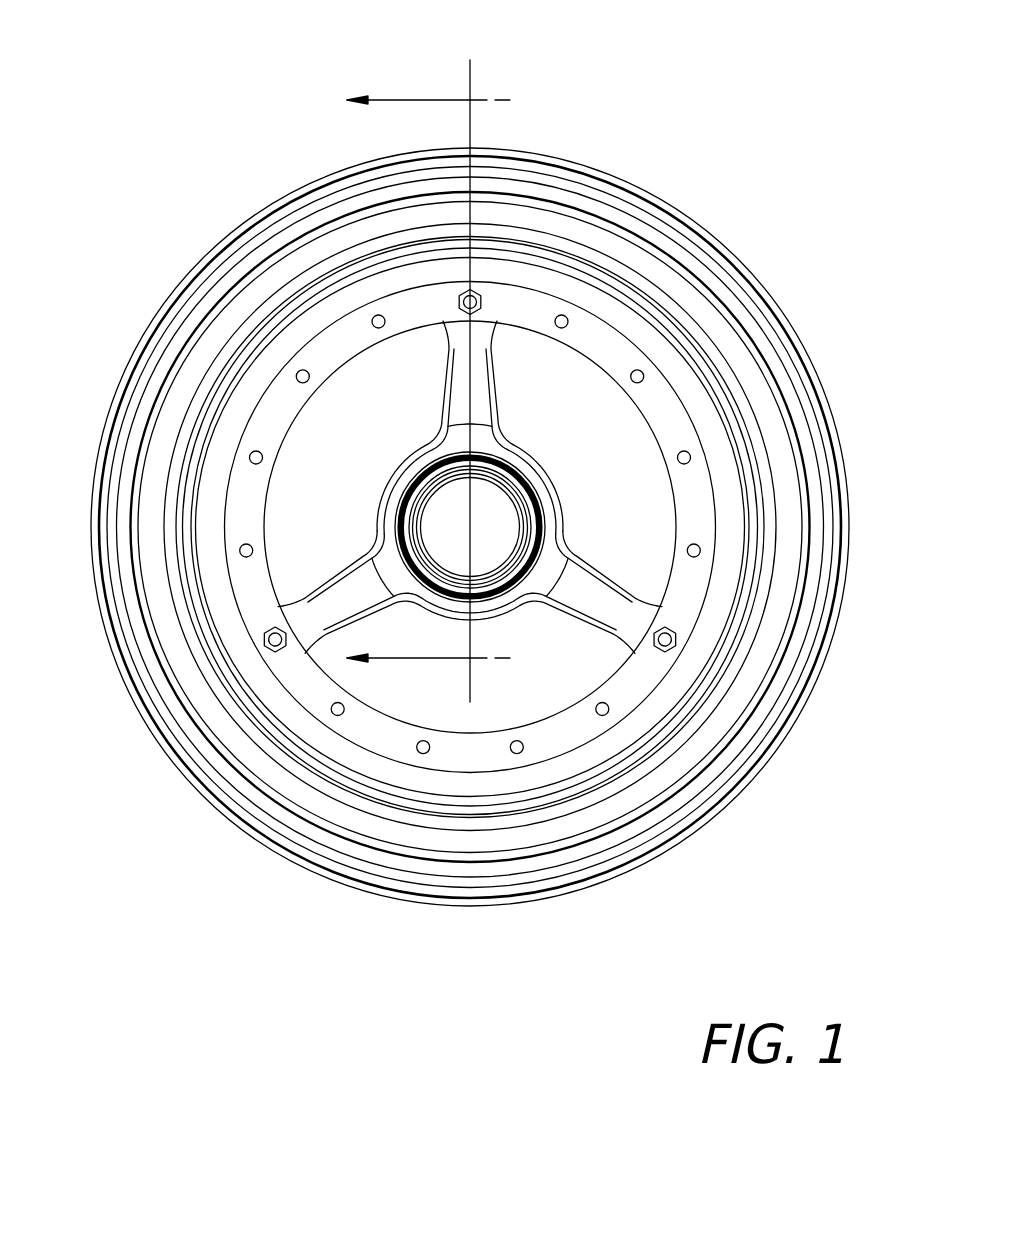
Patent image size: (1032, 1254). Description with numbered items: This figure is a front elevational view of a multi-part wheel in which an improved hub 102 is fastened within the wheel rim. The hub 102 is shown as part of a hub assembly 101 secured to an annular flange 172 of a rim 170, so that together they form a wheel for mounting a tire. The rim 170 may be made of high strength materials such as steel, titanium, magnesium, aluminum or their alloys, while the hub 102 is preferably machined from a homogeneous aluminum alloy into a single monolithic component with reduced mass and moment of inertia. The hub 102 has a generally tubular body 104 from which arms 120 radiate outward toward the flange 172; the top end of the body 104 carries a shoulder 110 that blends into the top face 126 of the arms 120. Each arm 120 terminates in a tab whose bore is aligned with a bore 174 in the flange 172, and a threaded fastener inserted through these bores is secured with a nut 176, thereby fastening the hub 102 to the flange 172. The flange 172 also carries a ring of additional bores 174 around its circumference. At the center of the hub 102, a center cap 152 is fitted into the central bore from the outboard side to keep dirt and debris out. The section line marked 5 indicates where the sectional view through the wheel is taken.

The hub assembly 101 is at (508, 362).
The wheel hub 102 is at (557, 465).
The body 104 is at (556, 510).
The shoulder 110 is at (403, 486).
The arms 120 is at (483, 386).
The top face 126 is at (622, 616).
The center cap 152 is at (438, 517).
The rim 170 is at (655, 205).
The annular flange 172 is at (367, 710).
The bore 174 is at (603, 711).
The nut 176 is at (468, 313).
The section line 5- 5 is at (431, 378).